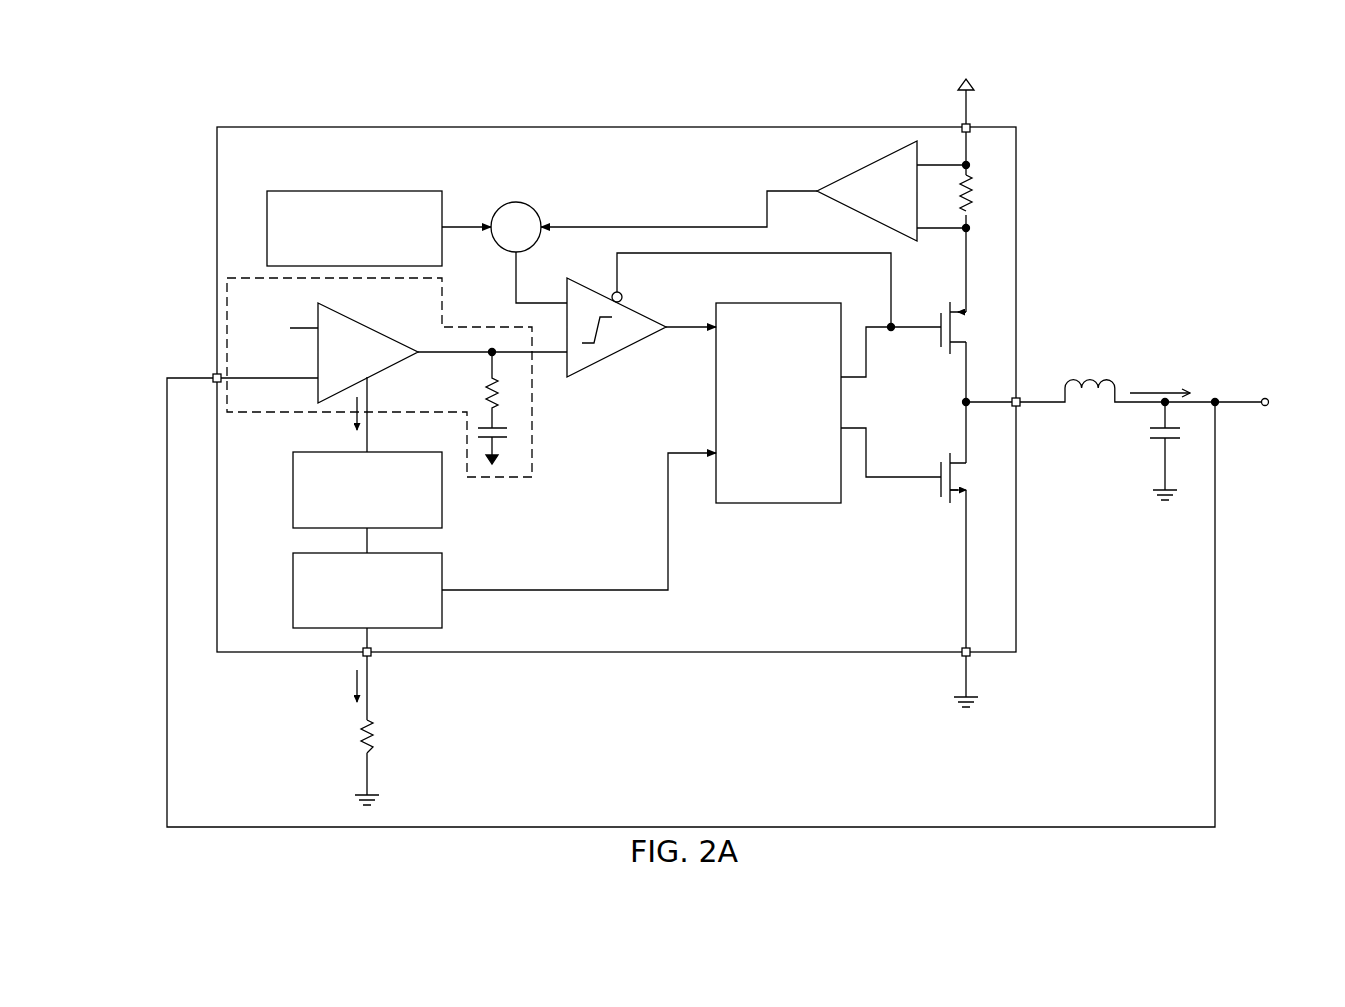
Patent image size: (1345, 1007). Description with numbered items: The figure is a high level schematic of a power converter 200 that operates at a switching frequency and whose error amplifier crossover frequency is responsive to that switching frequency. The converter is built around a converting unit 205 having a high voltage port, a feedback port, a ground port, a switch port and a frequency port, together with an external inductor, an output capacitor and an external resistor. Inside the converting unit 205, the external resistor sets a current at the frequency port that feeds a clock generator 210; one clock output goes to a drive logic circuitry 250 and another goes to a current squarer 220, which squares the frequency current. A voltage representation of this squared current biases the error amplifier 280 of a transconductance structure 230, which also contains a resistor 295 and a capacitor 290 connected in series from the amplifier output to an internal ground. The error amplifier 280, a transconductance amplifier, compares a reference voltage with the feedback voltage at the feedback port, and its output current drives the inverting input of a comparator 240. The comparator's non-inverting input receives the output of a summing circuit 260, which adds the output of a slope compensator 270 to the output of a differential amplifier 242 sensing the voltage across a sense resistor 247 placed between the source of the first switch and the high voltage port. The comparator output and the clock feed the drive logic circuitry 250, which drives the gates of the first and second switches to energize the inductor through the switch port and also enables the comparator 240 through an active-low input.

The power converter 200 is at (809, 78).
The converting unit 205 is at (1017, 203).
The clock generator 210 is at (293, 590).
The current squarer 220 is at (293, 492).
The transconductance structure 230 is at (533, 403).
The comparator 240 is at (618, 353).
The differential amplifier 242 is at (870, 164).
The sense resistor 247 is at (975, 196).
The drive logic circuitry 250 is at (782, 303).
The summing circuit 260 is at (517, 203).
The slope compensator 270 is at (355, 190).
The error amplifier 280 is at (343, 315).
The capacitor 290 is at (513, 432).
The resistor 295 is at (490, 378).